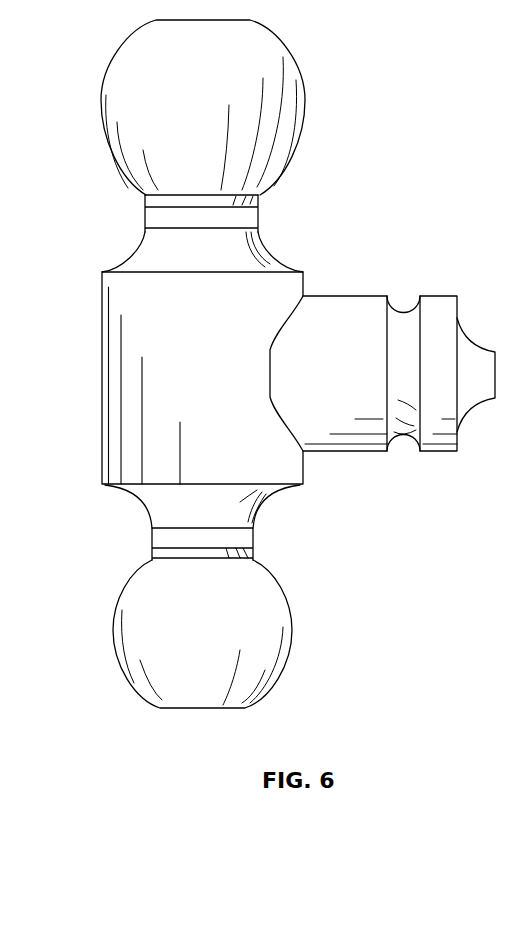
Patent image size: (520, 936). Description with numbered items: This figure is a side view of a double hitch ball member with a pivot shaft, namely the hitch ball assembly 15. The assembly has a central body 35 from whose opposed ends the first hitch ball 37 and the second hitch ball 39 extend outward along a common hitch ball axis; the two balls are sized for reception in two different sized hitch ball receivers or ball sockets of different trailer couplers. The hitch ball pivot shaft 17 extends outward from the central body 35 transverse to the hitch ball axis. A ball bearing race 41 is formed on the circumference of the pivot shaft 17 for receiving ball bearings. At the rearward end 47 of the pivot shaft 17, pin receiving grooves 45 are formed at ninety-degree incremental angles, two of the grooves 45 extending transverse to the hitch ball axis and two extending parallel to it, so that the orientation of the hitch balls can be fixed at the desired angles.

The hitch ball assembly 15 is at (101, 394).
The hitch ball pivot shaft 17 is at (340, 295).
The central body 35 is at (130, 450).
The first hitch ball 37 is at (262, 43).
The second hitch ball 39 is at (272, 645).
The ball bearing race 41 is at (392, 440).
The pin receiving grooves 45 is at (480, 340).
The rearward end 47 is at (442, 296).